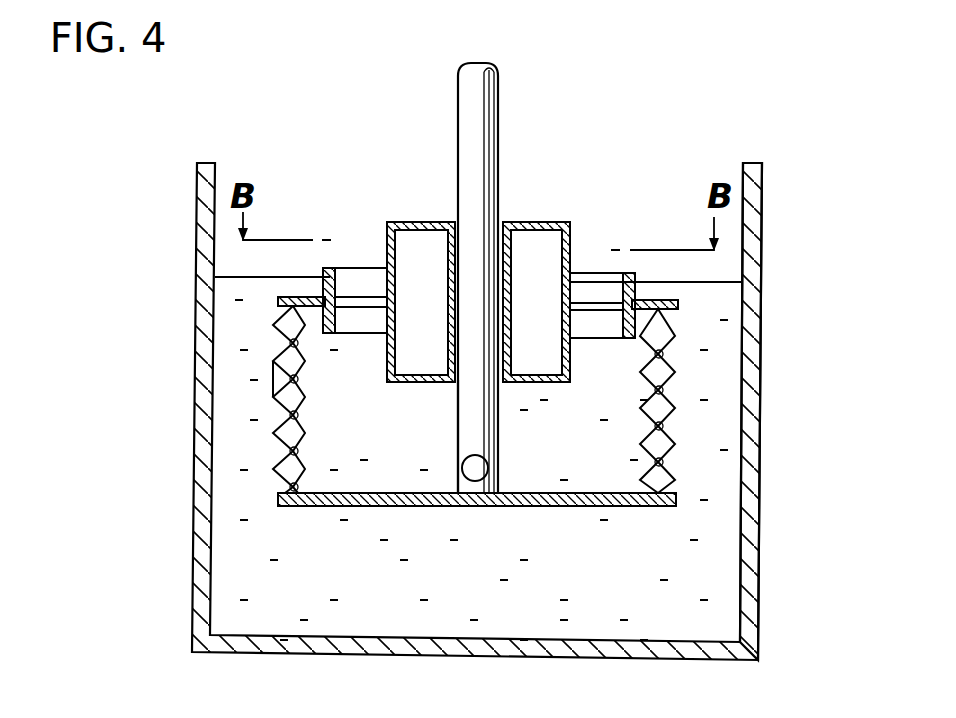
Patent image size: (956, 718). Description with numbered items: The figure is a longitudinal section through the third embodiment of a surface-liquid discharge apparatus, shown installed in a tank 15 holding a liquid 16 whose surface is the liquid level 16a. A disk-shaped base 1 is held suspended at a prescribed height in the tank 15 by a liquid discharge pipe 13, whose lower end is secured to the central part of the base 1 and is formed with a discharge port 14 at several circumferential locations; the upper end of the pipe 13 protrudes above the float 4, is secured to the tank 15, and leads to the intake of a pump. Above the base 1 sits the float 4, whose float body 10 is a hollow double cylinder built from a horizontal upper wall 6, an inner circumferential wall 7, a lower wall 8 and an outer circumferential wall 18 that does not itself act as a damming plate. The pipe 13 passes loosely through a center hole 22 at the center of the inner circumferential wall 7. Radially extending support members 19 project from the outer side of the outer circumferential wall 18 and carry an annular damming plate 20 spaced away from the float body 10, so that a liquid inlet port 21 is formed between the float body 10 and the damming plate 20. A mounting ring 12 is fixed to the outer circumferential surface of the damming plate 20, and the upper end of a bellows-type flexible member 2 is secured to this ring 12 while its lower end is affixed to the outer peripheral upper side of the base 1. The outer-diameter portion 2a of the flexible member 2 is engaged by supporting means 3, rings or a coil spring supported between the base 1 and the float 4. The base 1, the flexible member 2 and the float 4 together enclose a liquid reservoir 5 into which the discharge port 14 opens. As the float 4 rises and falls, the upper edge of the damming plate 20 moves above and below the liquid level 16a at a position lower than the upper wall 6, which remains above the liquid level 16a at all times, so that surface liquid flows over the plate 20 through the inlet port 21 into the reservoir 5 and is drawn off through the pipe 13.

The base 1 is at (613, 508).
The flexible member 2 is at (444, 411).
The outer-diameter portion 2a is at (283, 377).
The supporting means 3 is at (292, 376).
The float 4 is at (561, 221).
The liquid reservoir 5 is at (362, 473).
The upper wall 6 is at (533, 222).
The inner circumferential wall 7 is at (448, 263).
The lower wall 8 is at (423, 382).
The float body 10 is at (574, 252).
The mounting ring 12 is at (280, 301).
The liquid discharge pipe 13 is at (500, 92).
The discharge port 14 is at (478, 472).
The tank 15 is at (750, 462).
The liquid 16 is at (717, 377).
The liquid level 16a is at (713, 282).
The outer circumferential wall 18 is at (388, 248).
The support members 19 is at (350, 297).
The damming plate 20 is at (324, 293).
The liquid inlet port 21 is at (597, 323).
The center hole 22 is at (500, 388).